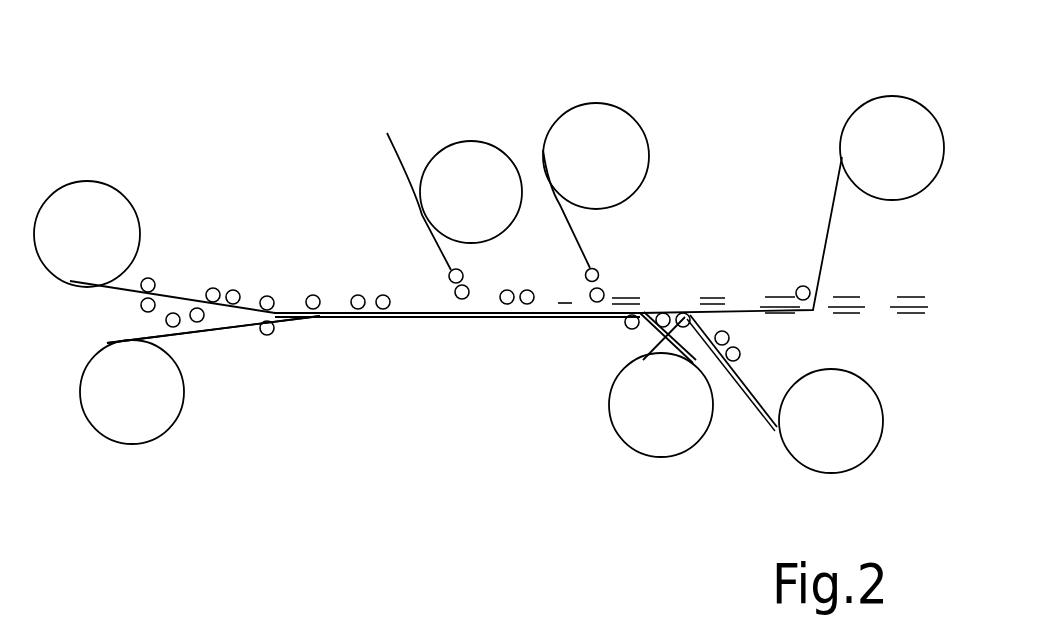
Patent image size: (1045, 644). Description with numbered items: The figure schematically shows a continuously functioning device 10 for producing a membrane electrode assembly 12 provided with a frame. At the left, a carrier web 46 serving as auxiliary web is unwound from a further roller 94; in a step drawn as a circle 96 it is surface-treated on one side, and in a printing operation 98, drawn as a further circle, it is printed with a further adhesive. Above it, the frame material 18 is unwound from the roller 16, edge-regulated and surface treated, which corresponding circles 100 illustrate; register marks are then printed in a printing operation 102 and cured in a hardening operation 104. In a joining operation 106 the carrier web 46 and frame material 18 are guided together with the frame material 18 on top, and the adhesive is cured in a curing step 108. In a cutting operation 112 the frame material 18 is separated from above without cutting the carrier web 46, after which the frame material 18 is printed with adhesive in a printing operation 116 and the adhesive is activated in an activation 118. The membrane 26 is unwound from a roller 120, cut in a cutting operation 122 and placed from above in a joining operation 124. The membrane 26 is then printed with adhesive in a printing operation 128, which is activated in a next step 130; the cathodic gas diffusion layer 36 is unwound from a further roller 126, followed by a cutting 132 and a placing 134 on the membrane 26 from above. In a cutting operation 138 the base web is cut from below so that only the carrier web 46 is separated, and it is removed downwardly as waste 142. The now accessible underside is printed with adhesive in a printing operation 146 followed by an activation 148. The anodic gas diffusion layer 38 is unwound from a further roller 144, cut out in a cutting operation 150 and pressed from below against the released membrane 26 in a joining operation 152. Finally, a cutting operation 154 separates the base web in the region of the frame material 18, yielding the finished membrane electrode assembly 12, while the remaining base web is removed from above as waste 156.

The continuously functioning device 10 is at (205, 96).
The membrane electrode assembly 12 is at (906, 282).
The roller 16 is at (80, 203).
The frame material 18 is at (108, 287).
The membrane 26 is at (402, 188).
The cathodic gas diffusion layer 36 is at (556, 196).
The anodic gas diffusion layer 38 is at (767, 433).
The carrier web 46 is at (228, 325).
The further roller 94 is at (137, 417).
The surface treatment step 96 is at (174, 327).
The printing operation 98 is at (198, 322).
The edge regulation and surface treatment step 100 is at (141, 305).
The printing operation 102 is at (212, 288).
The hardening operation 104 is at (234, 290).
The joining operation 106 is at (269, 296).
The curing step 108 is at (269, 335).
The cutting operation 112 is at (314, 295).
The printing operation 116 is at (359, 295).
The activation 118 is at (385, 309).
The roller 120 is at (462, 170).
The cutting operation 122 is at (462, 271).
The joining operation 124 is at (469, 290).
The further roller 126 is at (597, 125).
The printing operation 128 is at (503, 304).
The activation step 130 is at (525, 304).
The cutting 132 is at (596, 269).
The placing 134 is at (594, 302).
The cutting operation 138 is at (630, 329).
The waste 142 is at (662, 438).
The further roller 144 is at (831, 450).
The printing operation 146 is at (660, 313).
The activation 148 is at (685, 313).
The cutting operation 150 is at (740, 354).
The joining operation 152 is at (723, 331).
The cutting operation 154 is at (801, 286).
The waste 156 is at (890, 120).